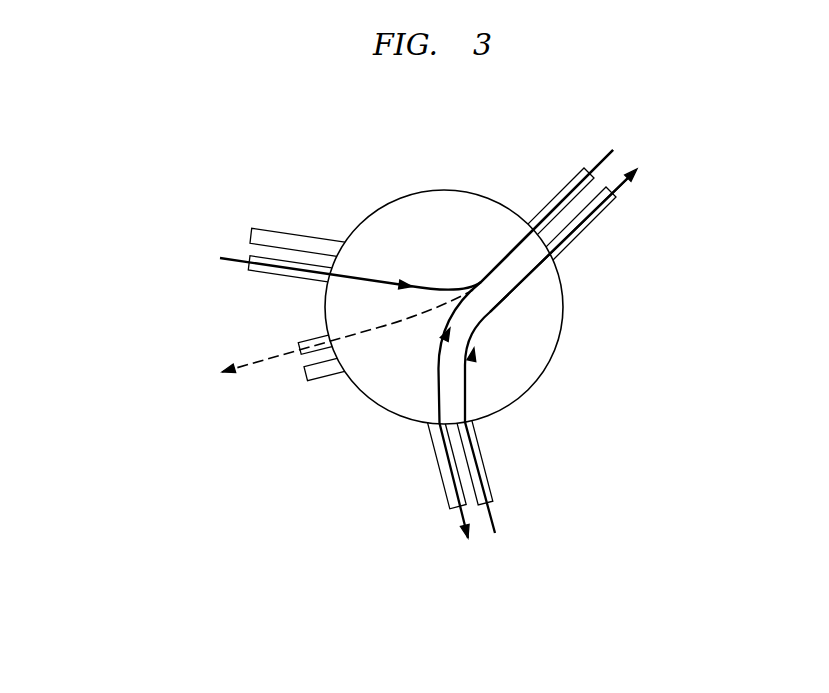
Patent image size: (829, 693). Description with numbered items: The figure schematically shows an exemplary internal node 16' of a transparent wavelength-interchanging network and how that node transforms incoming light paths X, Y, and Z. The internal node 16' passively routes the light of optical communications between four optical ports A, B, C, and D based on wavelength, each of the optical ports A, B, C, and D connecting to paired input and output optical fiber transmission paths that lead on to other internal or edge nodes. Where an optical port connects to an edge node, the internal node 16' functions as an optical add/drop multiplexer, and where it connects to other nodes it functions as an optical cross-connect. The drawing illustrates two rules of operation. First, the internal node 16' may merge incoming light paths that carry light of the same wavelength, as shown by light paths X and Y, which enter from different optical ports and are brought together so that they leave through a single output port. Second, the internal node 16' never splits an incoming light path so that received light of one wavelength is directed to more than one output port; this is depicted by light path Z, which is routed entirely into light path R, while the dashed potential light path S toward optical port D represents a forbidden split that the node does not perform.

The internal node 16' is at (520, 307).
The optical port A is at (194, 243).
The optical port B is at (645, 148).
The optical port C is at (490, 558).
The light path X is at (232, 262).
The light path Y is at (493, 520).
The light path Z is at (602, 162).
The light path R is at (461, 518).
The potential light path S is at (270, 357).
The optical port D is at (204, 386).